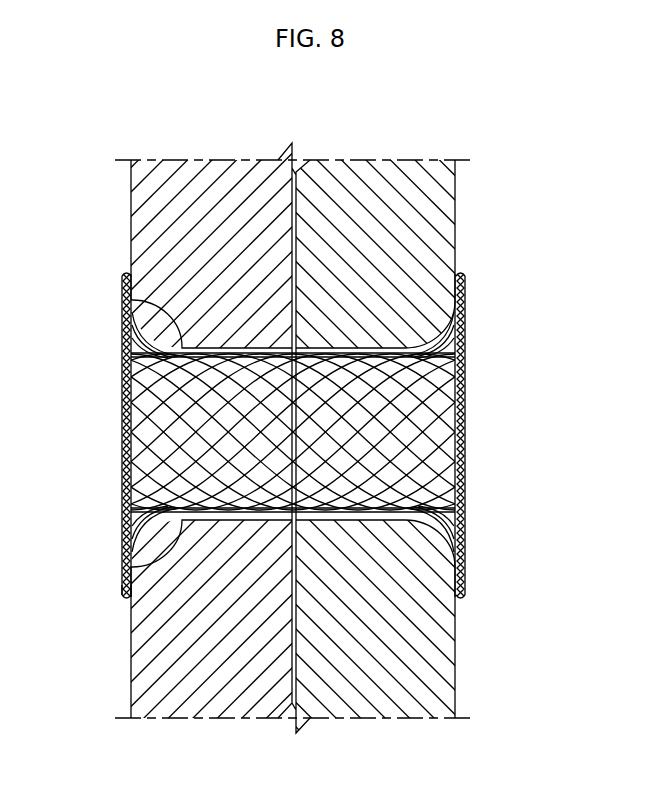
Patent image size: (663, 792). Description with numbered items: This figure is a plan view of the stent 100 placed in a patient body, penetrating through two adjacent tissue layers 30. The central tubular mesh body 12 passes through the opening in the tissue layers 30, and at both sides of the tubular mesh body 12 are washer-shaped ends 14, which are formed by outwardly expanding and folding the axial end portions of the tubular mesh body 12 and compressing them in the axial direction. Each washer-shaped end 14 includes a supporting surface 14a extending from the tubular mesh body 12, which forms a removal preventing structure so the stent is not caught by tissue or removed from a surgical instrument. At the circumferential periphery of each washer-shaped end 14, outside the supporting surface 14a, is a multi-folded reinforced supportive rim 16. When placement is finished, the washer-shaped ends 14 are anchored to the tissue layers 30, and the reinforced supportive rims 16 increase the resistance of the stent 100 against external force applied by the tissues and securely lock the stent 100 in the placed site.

The stent 100 is at (331, 447).
The tubular mesh body 12 is at (373, 353).
The washer-shaped end 14 is at (480, 548).
The supporting surface 14a is at (131, 563).
The reinforced supportive rim 16 is at (130, 597).
The tissue layer 30 is at (145, 244).